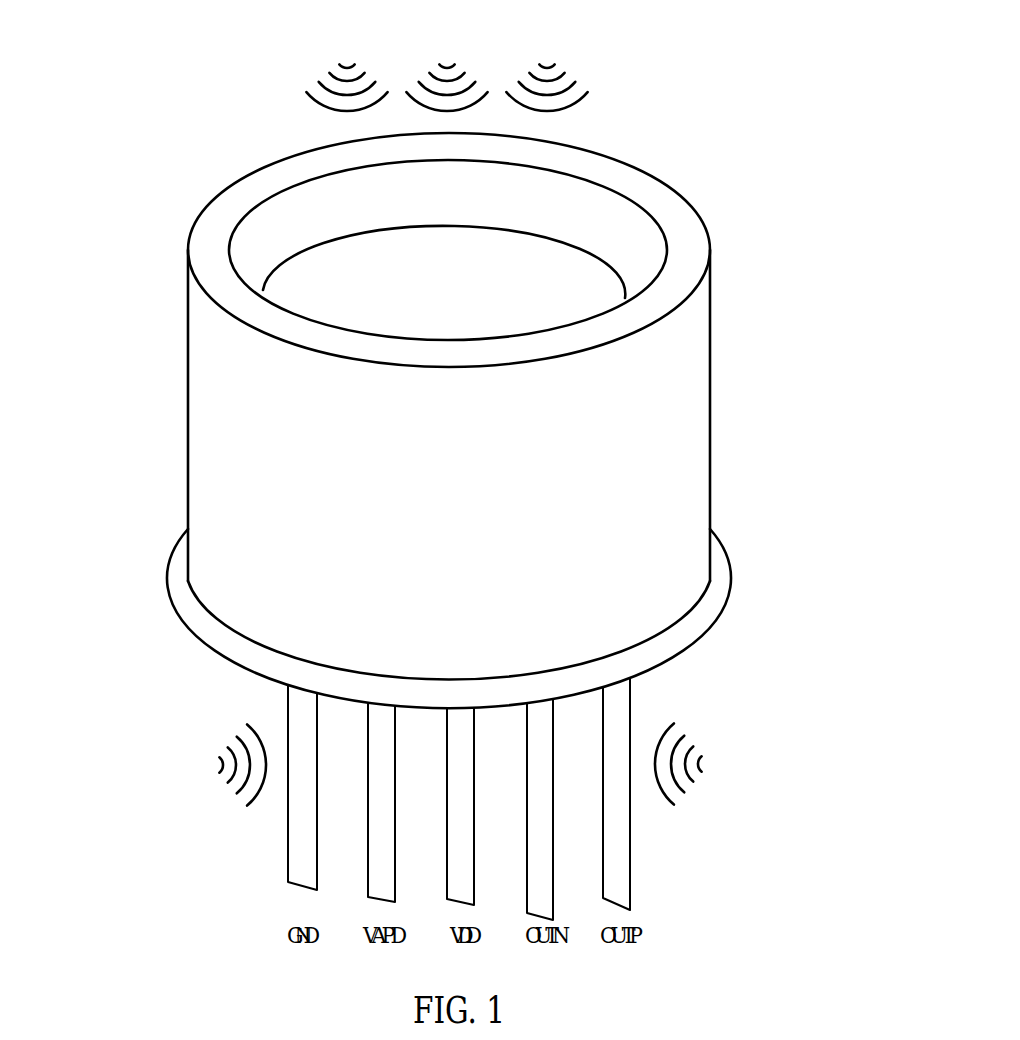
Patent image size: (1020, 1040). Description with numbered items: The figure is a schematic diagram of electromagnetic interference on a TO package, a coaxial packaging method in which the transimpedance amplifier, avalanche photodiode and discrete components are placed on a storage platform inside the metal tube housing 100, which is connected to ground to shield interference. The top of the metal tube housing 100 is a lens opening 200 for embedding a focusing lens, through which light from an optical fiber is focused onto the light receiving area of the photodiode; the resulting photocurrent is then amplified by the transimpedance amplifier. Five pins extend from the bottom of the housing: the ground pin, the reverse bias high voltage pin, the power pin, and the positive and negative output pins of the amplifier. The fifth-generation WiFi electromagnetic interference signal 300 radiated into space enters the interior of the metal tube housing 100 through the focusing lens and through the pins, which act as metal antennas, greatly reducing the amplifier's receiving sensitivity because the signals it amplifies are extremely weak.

The metal tube housing 100 is at (627, 473).
The lens opening 200 is at (430, 262).
The 5G WiFi electromagnetic interference signal 300 is at (468, 77).